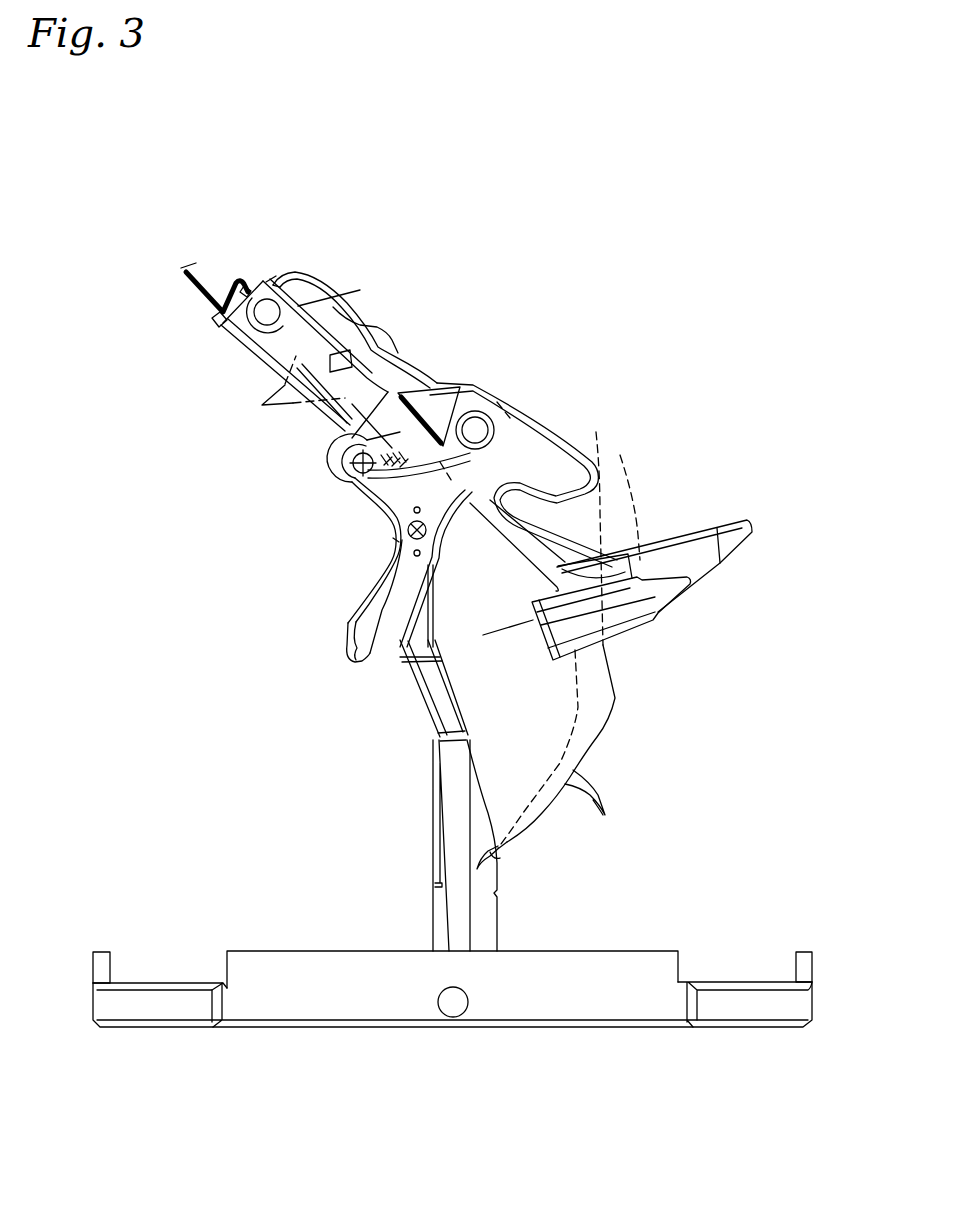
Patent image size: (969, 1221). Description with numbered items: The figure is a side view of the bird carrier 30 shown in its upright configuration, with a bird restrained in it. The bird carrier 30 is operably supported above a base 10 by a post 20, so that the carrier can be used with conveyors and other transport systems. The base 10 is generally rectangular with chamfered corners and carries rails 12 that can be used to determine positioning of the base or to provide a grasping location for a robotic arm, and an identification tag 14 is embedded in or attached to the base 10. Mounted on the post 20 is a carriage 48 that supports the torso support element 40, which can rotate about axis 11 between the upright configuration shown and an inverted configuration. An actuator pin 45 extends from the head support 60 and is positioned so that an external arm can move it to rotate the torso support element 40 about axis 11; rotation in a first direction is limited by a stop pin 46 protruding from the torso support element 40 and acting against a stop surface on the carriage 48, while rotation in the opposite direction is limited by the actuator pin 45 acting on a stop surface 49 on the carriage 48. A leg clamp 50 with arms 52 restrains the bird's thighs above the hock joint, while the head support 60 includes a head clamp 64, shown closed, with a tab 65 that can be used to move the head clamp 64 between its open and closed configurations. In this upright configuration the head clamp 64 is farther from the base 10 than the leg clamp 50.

The base 10 is at (180, 982).
The axis 11 is at (341, 487).
The rails 12 is at (101, 951).
The identification tag 14 is at (440, 1013).
The post 20 is at (434, 802).
The bird carrier 30 is at (522, 248).
The torso support element 40 is at (580, 452).
The actuator pin 45 is at (247, 333).
The stop pin 46 is at (487, 418).
The carriage 48 is at (369, 506).
The stop surface 49 is at (350, 648).
The leg clamp 50 is at (654, 569).
The arms 52 is at (738, 520).
The head support 60 is at (240, 378).
The head clamp 64 is at (352, 304).
The tab 65 is at (184, 268).